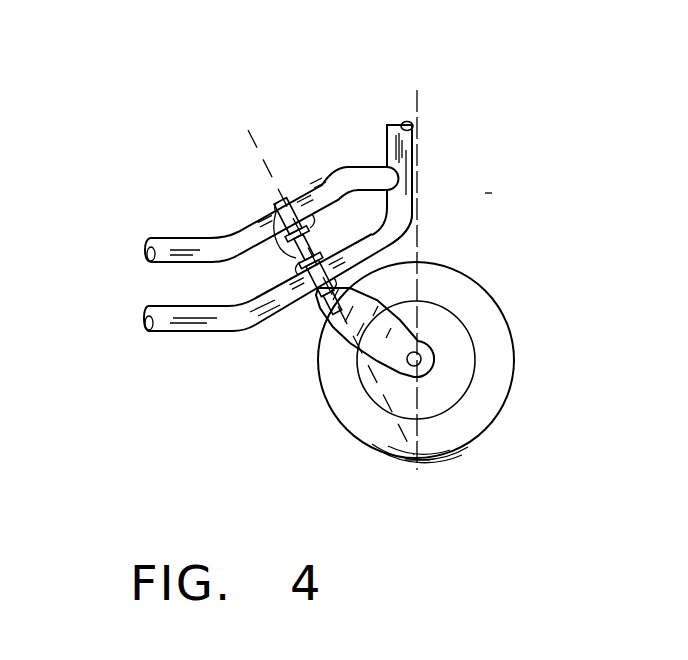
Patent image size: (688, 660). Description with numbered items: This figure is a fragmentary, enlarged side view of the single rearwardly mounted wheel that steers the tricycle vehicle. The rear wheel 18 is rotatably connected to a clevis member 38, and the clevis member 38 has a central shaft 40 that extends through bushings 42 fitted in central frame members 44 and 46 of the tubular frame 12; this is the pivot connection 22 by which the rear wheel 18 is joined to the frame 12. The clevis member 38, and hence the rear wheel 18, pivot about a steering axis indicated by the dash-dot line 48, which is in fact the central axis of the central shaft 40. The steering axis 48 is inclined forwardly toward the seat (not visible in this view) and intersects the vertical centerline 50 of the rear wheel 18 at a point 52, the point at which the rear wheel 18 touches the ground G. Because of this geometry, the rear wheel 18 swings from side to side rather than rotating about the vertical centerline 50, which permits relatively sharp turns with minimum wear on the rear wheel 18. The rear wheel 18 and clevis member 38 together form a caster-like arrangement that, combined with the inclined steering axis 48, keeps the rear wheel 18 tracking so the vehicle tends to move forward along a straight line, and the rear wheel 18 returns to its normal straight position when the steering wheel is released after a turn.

The frame 12 is at (412, 140).
The rear wheel 18 is at (510, 332).
The pivot connection 22 is at (412, 223).
The clevis member 38 is at (390, 305).
The central shaft 40 is at (275, 255).
The bushings 42 is at (283, 200).
The central frame member 44 is at (169, 238).
The central frame member 46 is at (174, 332).
The steering axis 48 is at (258, 143).
The vertical centerline 50 is at (420, 102).
The point 52 is at (418, 459).
The ground G is at (418, 459).